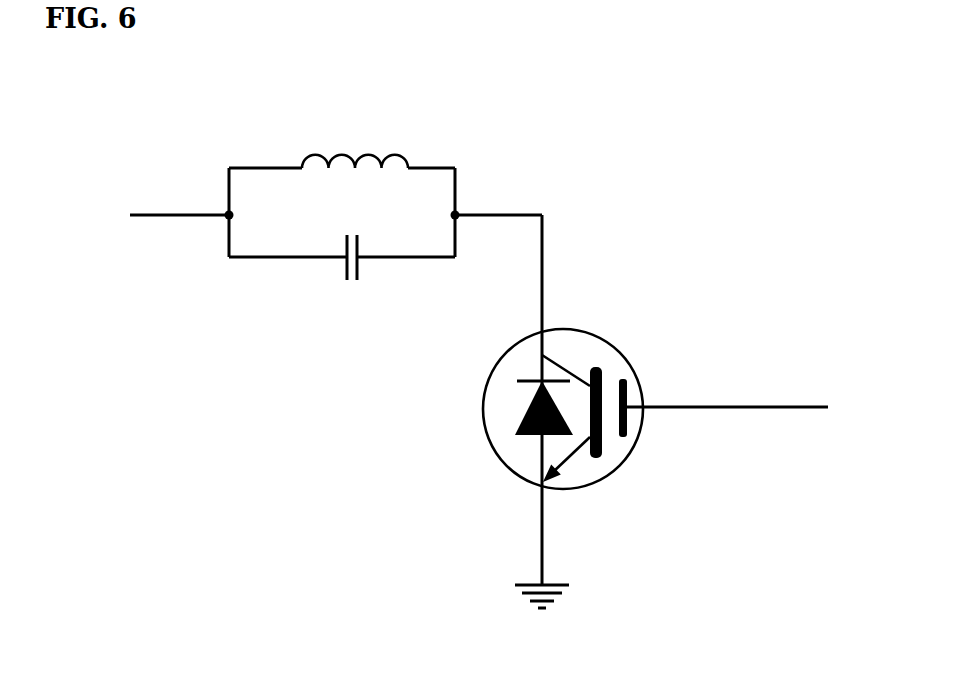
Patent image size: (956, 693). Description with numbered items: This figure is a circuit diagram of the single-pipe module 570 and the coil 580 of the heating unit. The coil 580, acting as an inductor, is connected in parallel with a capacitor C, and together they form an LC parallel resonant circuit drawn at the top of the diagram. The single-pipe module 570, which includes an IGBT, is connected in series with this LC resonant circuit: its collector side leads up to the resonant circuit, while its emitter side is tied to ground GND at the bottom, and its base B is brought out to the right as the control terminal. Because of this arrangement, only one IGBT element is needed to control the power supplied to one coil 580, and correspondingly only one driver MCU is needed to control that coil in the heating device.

The coil 580 is at (342, 200).
The single-pipe module 570 is at (655, 405).
The capacitor C is at (352, 243).
The base terminal B is at (727, 394).
The ground GND is at (542, 612).